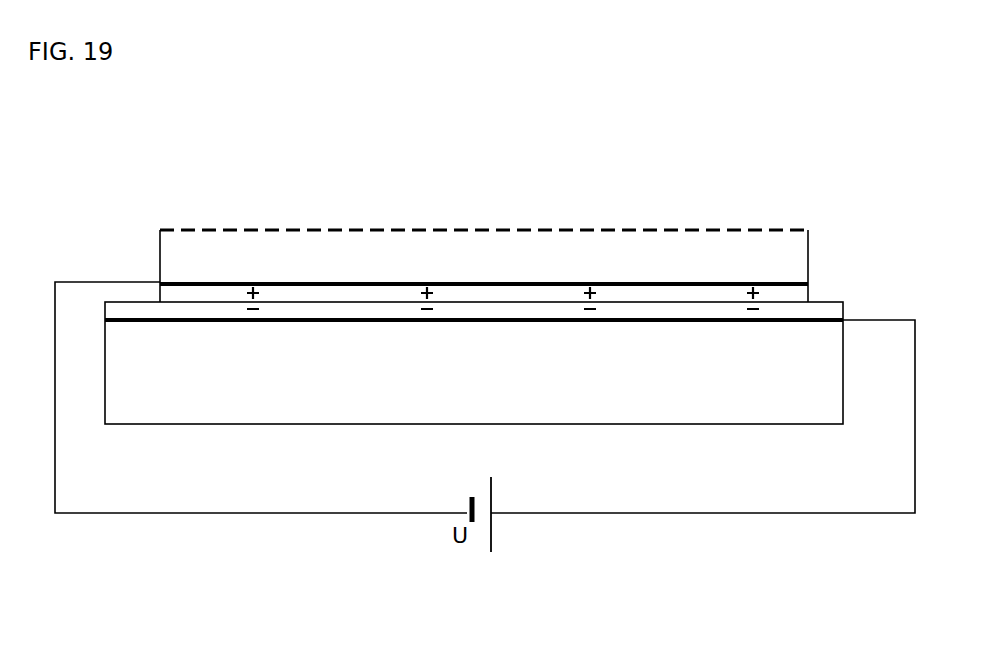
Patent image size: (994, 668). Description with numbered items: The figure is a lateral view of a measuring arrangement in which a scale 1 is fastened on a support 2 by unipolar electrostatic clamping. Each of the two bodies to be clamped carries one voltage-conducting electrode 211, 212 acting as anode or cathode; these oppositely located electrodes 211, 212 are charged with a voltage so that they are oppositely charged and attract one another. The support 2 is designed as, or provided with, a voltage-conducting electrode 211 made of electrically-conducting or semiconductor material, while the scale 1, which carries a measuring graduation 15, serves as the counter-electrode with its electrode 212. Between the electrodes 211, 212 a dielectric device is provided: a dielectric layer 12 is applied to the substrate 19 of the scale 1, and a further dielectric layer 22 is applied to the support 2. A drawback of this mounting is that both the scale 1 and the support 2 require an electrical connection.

The scale 1 is at (828, 230).
The measuring graduation 15 is at (232, 230).
The substrate 19 is at (330, 256).
The electrode 212 is at (645, 277).
The dielectric layer 12 is at (483, 293).
The support 2 is at (753, 408).
The dielectric layer 22 is at (347, 308).
The electrode 211 is at (210, 322).